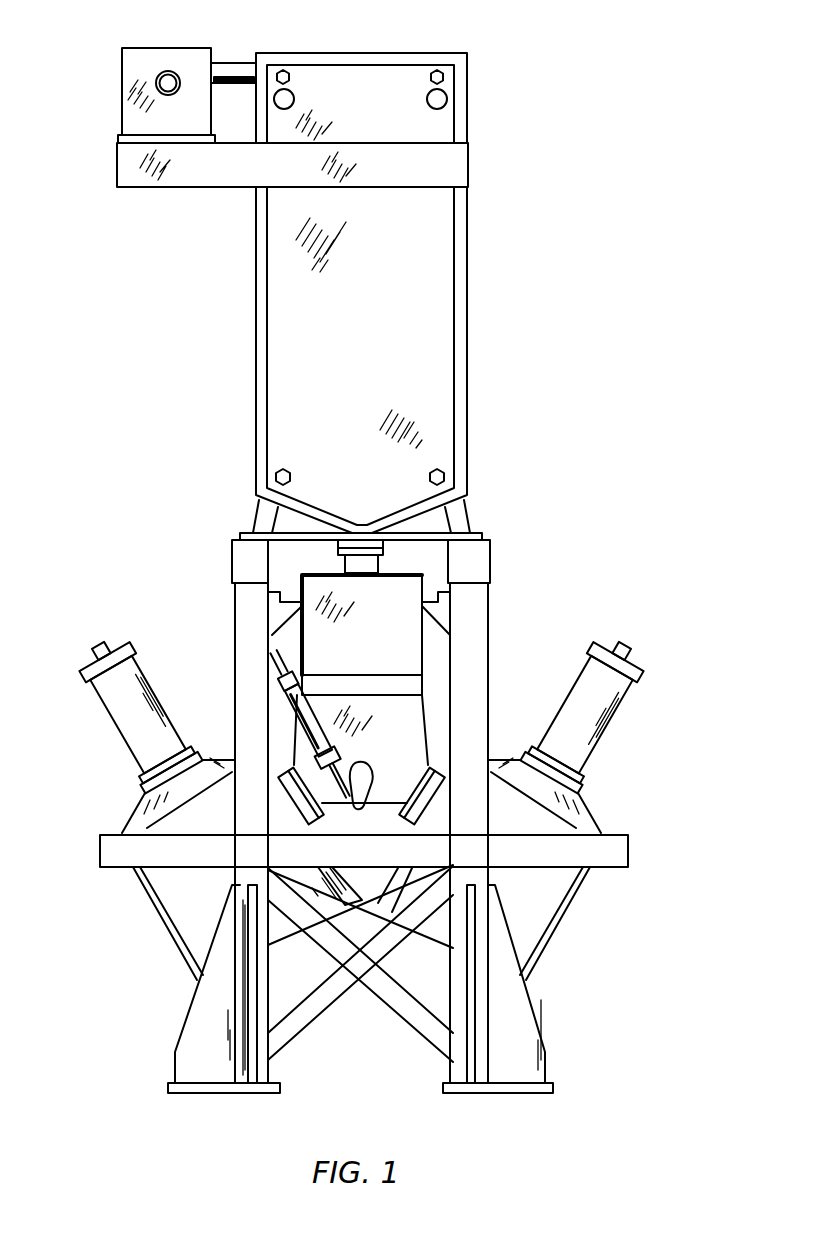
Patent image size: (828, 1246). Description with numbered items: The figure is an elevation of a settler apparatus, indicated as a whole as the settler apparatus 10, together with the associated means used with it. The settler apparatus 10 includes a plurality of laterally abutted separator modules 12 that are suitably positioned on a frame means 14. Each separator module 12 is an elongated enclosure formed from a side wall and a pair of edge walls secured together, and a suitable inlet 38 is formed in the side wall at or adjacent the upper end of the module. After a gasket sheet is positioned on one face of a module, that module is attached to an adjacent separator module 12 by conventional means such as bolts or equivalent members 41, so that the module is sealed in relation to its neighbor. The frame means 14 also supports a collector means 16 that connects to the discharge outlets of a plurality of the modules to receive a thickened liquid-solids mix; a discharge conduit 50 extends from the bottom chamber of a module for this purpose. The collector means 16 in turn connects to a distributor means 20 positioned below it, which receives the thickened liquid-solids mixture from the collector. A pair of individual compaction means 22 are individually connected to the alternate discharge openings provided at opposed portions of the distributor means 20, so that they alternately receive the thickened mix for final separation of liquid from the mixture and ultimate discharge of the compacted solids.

The settler apparatus 10 is at (386, 548).
The separator module 12 is at (473, 275).
The frame means 14 is at (490, 617).
The collector means 16 is at (359, 635).
The distributor means 20 is at (353, 736).
The compaction means 22 is at (612, 723).
The inlet 38 is at (296, 99).
The bolts 41 is at (285, 68).
The discharge conduit 50 is at (384, 565).